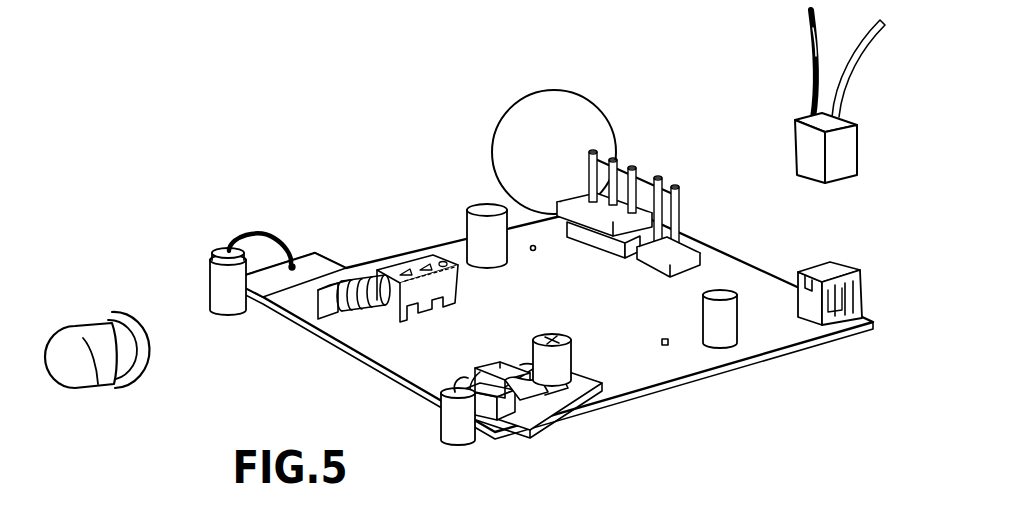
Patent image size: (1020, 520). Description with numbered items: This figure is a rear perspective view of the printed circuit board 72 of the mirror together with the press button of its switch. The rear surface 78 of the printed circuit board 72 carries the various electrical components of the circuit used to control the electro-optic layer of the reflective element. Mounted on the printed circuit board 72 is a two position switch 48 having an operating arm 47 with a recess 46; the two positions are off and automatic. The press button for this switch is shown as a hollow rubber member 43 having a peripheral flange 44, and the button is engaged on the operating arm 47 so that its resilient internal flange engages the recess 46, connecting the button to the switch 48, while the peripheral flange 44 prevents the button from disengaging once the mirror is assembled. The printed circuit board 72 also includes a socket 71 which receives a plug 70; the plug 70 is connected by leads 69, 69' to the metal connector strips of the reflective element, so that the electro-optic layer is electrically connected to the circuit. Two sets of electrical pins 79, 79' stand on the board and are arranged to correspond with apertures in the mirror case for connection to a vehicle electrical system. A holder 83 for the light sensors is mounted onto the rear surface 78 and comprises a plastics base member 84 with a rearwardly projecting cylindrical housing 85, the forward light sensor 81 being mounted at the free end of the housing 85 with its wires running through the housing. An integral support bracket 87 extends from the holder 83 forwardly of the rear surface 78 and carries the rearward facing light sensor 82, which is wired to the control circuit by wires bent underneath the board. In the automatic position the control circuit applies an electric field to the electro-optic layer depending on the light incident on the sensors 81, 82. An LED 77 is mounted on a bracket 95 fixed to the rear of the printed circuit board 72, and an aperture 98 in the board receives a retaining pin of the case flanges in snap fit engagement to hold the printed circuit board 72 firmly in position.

The hollow rubber member 43 is at (91, 357).
The peripheral flange 44 is at (113, 327).
The recess 46 is at (350, 285).
The operating arm 47 is at (306, 292).
The two position switch 48 is at (417, 262).
The lead 69 is at (864, 68).
The lead 69' is at (784, 64).
The plug 70 is at (840, 139).
The socket 71 is at (858, 284).
The printed circuit board 72 is at (777, 333).
The LED 77 is at (233, 294).
The rear surface 78 is at (755, 290).
The electrical pins 79 is at (609, 192).
The electrical pins 79' is at (684, 240).
The forward light sensor 81 is at (555, 337).
The rearward light sensor 82 is at (453, 433).
The holder 83 is at (543, 407).
The plastics base member 84 is at (518, 397).
The cylindrical housing 85 is at (570, 390).
The support bracket 87 is at (483, 430).
The bracket 95 is at (272, 281).
The aperture 98 is at (535, 252).